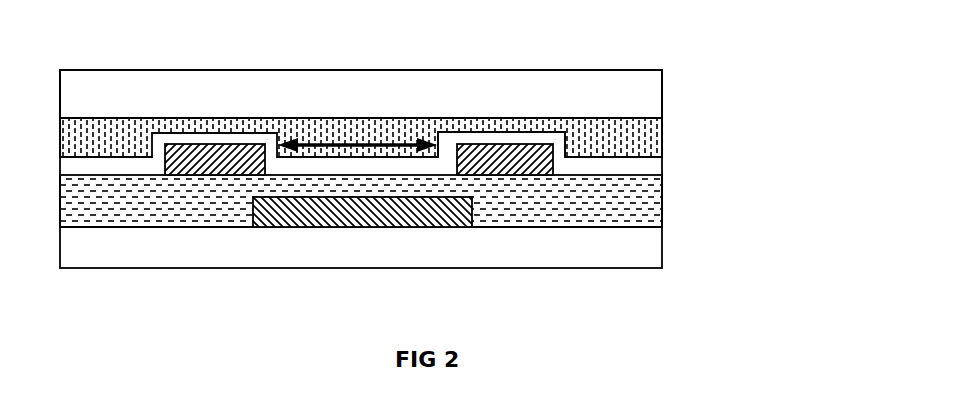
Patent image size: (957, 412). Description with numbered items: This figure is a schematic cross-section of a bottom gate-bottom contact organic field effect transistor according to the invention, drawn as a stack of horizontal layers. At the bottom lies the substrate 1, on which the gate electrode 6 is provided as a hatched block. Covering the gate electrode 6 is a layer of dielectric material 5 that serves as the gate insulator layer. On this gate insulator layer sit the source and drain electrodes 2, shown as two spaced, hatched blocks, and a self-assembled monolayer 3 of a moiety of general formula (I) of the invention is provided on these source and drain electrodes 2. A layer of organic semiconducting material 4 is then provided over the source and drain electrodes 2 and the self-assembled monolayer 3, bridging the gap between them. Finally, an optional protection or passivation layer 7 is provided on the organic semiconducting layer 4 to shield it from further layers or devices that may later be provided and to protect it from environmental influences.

The substrate 1 is at (653, 243).
The source and drain electrodes 2 is at (463, 150).
The self-assembled monolayer 3 is at (554, 140).
The layer of organic semiconducting material 4 is at (648, 208).
The layer of dielectric material 5 is at (652, 137).
The gate electrode 6 is at (423, 225).
The protection or passivation layer 7 is at (647, 98).